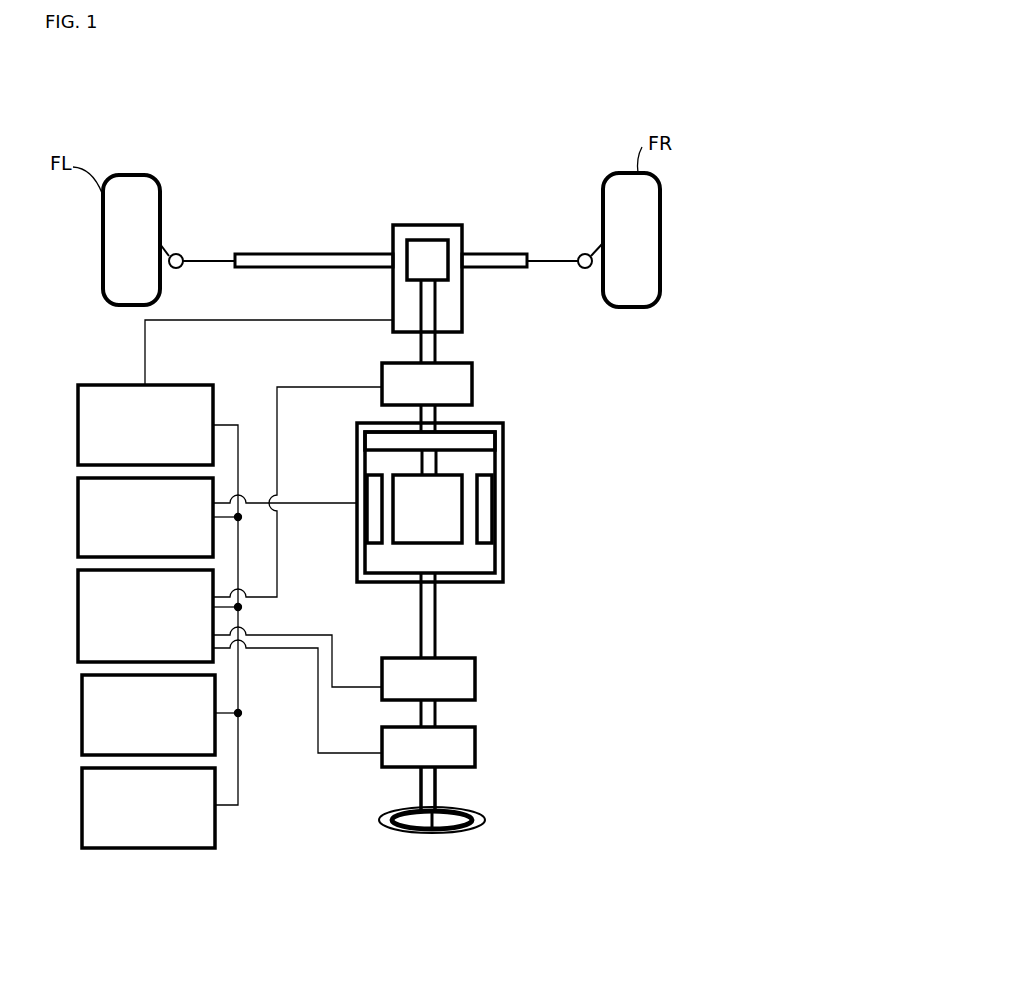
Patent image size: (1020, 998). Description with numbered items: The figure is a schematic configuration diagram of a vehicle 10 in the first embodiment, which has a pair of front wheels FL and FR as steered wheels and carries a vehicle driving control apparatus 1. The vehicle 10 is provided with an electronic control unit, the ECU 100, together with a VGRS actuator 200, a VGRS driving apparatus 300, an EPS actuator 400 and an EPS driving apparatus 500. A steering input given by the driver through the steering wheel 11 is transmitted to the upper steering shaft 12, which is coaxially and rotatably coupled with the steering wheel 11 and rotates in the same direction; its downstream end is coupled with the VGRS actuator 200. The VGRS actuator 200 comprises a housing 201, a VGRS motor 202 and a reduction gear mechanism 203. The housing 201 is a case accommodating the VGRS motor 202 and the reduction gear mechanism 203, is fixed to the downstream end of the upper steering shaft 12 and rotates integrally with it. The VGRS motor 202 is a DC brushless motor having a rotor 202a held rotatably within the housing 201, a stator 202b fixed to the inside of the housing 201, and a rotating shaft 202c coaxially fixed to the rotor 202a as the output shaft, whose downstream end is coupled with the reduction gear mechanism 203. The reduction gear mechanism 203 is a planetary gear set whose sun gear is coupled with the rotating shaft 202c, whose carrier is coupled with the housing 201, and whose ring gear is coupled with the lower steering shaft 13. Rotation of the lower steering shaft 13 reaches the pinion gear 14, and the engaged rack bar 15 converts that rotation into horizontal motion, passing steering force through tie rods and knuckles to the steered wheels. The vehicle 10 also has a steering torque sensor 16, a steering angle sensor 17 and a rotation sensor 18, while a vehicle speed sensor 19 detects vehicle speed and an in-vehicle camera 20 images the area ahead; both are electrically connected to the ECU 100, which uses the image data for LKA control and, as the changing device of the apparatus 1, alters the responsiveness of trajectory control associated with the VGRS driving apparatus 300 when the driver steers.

The vehicle driving control apparatus 1 is at (267, 862).
The vehicle 10 is at (590, 97).
The steering wheel 11 is at (390, 828).
The upper steering shaft 12 is at (433, 795).
The lower steering shaft 13 is at (428, 347).
The pinion gear 14 is at (425, 240).
The rack bar 15 is at (265, 252).
The steering torque sensor 16 is at (475, 750).
The steering angle sensor 17 is at (475, 687).
The rotation sensor 18 is at (382, 365).
The vehicle speed sensor 19 is at (82, 674).
The in-vehicle camera 20 is at (82, 767).
The electronic control unit (ECU) 100 is at (78, 569).
The VGRS actuator 200 is at (576, 563).
The housing 201 is at (503, 553).
The VGRS motor 202 is at (519, 504).
The rotor 202a is at (437, 493).
The stator 202b is at (367, 529).
The rotating shaft 202c is at (428, 462).
The reduction gear mechanism 203 is at (485, 441).
The VGRS driving apparatus 300 is at (78, 477).
The EPS actuator 400 is at (462, 308).
The EPS driving apparatus 500 is at (78, 384).